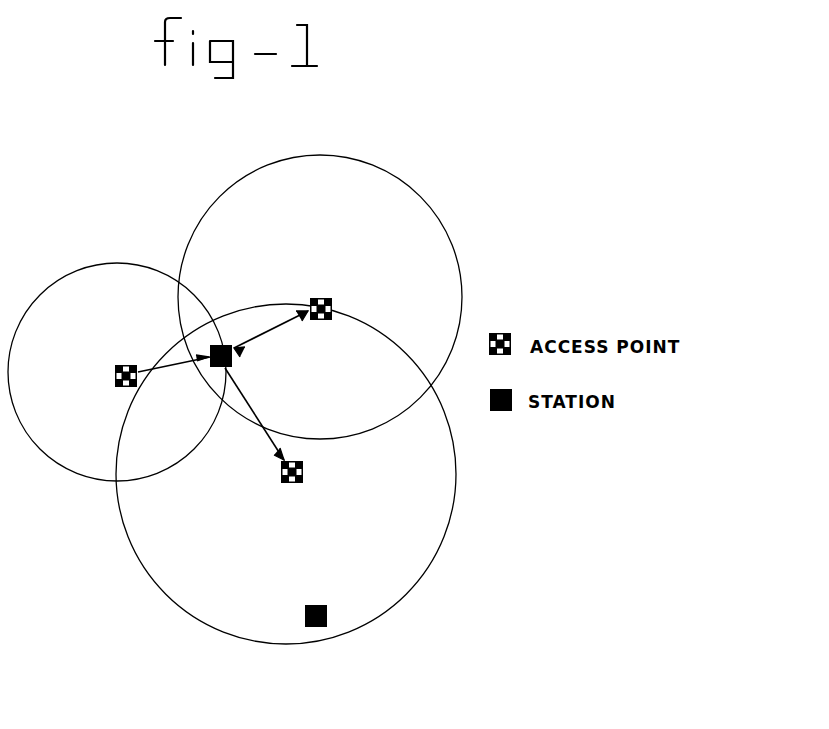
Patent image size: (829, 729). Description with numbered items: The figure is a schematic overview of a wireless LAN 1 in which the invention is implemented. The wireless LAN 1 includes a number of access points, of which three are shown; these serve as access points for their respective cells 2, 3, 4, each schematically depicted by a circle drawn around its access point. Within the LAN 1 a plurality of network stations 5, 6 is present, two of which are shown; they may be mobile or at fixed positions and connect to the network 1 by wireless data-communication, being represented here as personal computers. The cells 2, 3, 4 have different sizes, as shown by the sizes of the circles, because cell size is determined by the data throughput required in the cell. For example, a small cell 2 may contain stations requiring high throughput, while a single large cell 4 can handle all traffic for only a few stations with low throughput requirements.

The wireless LAN 1 is at (466, 232).
The cell 2 is at (82, 268).
The cell 3 is at (222, 188).
The cell 4 is at (452, 523).
The network station 5 is at (233, 358).
The network station 6 is at (321, 627).